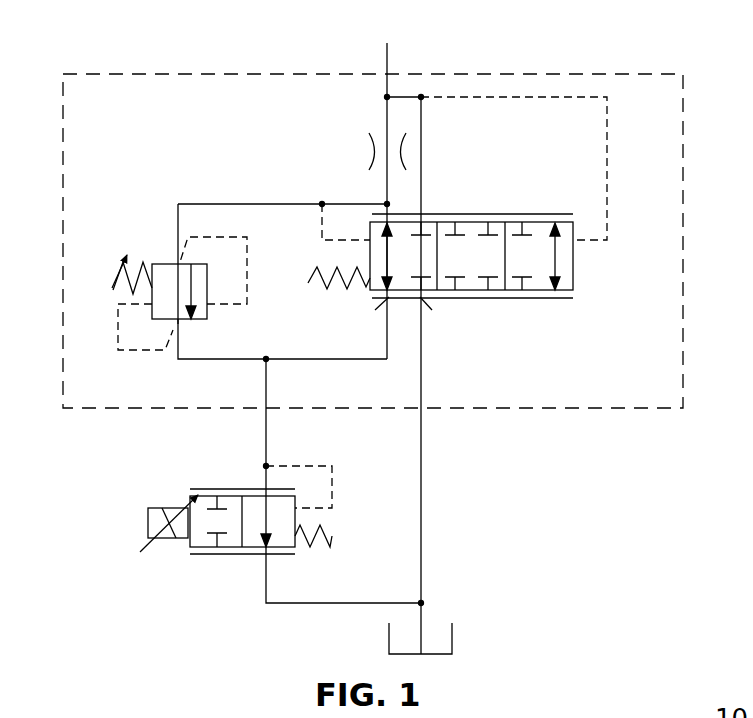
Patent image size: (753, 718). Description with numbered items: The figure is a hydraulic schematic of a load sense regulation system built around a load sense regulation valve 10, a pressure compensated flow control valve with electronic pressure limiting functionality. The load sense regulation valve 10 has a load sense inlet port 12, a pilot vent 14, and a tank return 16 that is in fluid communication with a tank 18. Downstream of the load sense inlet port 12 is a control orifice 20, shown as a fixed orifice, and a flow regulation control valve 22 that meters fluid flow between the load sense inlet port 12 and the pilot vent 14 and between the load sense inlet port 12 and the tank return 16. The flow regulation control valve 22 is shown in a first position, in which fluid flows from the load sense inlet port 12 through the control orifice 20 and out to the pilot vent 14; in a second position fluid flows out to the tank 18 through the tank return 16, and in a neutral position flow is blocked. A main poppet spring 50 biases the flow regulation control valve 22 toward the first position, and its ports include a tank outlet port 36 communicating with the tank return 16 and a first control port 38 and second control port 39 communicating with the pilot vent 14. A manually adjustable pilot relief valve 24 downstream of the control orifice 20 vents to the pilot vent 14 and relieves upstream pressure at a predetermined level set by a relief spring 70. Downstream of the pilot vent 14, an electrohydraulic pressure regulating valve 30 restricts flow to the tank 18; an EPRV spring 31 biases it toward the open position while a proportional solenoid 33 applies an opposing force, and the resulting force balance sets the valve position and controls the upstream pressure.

The load sense regulation valve 10 is at (632, 72).
The load sense inlet port 12 is at (388, 58).
The pilot vent 14 is at (262, 372).
The tank return 16 is at (421, 447).
The tank 18 is at (452, 638).
The control orifice 20 is at (375, 152).
The flow regulation control valve 22 is at (516, 316).
The pilot relief valve 24 is at (155, 248).
The electrohydraulic pressure regulating valve 30 is at (195, 478).
The EPRV spring 31 is at (320, 545).
The solenoid 33 is at (148, 524).
The tank outlet port 36 is at (431, 309).
The first control port 38 is at (376, 309).
The second control port 39 is at (178, 320).
The main poppet spring 50 is at (308, 285).
The relief spring 70 is at (133, 283).